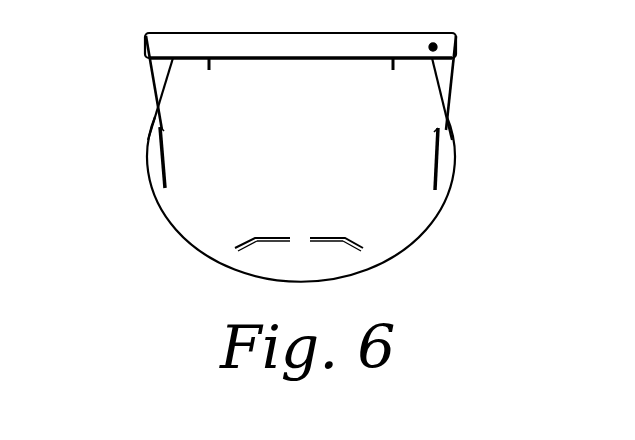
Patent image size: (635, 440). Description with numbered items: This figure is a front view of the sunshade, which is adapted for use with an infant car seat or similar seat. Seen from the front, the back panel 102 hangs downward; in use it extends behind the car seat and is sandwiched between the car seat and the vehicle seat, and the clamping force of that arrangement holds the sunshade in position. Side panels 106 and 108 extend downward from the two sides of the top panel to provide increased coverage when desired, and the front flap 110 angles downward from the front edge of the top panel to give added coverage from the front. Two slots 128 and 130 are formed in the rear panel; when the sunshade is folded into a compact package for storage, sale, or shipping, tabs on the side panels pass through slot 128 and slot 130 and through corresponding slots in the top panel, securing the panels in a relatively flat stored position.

The back panel 102 is at (371, 199).
The side panel 106 is at (101, 112).
The side panel 108 is at (522, 113).
The front flap 110 is at (521, 25).
The slot 128 is at (192, 273).
The slot 130 is at (417, 273).